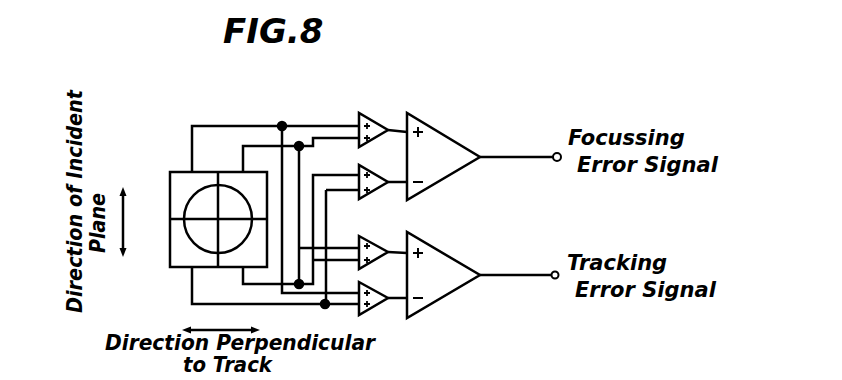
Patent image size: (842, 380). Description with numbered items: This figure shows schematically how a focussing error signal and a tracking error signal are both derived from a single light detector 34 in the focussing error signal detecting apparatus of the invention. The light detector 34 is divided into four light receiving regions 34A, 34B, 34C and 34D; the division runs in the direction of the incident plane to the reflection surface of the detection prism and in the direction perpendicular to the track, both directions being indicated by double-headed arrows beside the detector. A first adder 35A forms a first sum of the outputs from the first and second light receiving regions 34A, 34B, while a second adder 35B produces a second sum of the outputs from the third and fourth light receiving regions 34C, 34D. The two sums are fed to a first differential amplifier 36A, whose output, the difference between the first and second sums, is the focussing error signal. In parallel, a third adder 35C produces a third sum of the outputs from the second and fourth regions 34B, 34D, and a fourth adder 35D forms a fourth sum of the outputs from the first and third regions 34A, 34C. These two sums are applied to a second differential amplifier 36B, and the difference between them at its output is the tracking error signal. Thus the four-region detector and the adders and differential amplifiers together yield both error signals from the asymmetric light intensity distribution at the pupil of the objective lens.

The light detector 34 is at (156, 179).
The first light receiving region 34A is at (176, 172).
The second light receiving region 34B is at (230, 172).
The third light receiving region 34C is at (172, 254).
The fourth light receiving region 34D is at (256, 258).
The first adder 35A is at (379, 125).
The second adder 35B is at (358, 166).
The third adder 35C is at (378, 238).
The fourth adder 35D is at (373, 313).
The first differential amplifier 36A is at (447, 137).
The second differential amplifier 36B is at (440, 267).